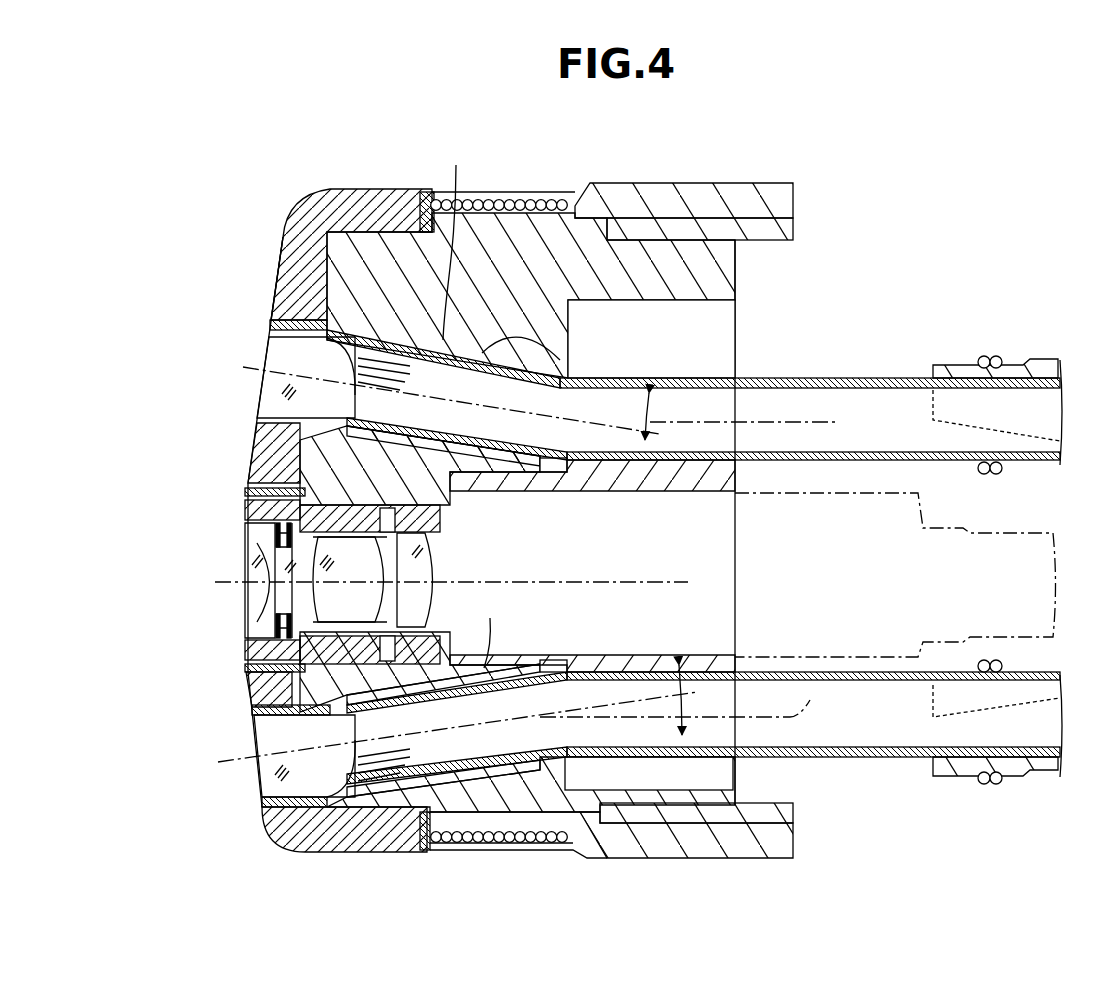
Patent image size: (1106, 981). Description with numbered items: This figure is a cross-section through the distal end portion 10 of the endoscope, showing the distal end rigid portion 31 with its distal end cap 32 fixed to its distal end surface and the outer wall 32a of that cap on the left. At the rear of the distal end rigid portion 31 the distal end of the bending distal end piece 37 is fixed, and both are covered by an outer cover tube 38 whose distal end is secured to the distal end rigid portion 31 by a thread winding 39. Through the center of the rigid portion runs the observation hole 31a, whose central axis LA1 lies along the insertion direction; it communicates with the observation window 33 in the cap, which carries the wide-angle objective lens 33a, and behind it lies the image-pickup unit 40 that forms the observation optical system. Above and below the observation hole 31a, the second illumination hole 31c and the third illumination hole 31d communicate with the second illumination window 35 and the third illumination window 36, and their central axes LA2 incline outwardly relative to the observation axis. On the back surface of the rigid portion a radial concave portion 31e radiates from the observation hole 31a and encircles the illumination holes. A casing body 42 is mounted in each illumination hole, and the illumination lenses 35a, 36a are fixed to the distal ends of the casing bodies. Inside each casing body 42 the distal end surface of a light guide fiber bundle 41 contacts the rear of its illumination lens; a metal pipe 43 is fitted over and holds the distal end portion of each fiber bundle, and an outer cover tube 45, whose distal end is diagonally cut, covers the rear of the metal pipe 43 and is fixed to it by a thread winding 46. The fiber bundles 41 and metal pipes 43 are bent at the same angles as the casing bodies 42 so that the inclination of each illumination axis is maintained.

The distal end portion 10 is at (778, 156).
The distal end rigid portion 31 is at (737, 275).
The observation hole 31a is at (542, 656).
The second illumination hole 31c is at (542, 357).
The third illumination hole 31d is at (498, 812).
The radial concave portion 31e is at (737, 333).
The distal end cap 32 is at (352, 853).
The housing outer wall 32a is at (278, 266).
The observation window 33 is at (245, 636).
The objective lens 33a is at (262, 533).
The second illumination window 35 is at (270, 325).
The illumination lens 35a is at (276, 388).
The third illumination window 36 is at (262, 800).
The illumination lens 36a is at (270, 736).
The bending distal end piece 37 is at (790, 232).
The outer cover tube 38 is at (651, 200).
The thread winding 39 is at (512, 199).
The image-pickup unit 40 is at (918, 586).
The light guide fiber bundle 41 is at (838, 402).
The casing body 42 is at (594, 325).
The metal pipe 43 is at (893, 380).
The outer cover tube 45 is at (1050, 365).
The thread winding 46 is at (990, 356).
The central axis LA1 is at (628, 582).
The central axis LA2 is at (250, 367).